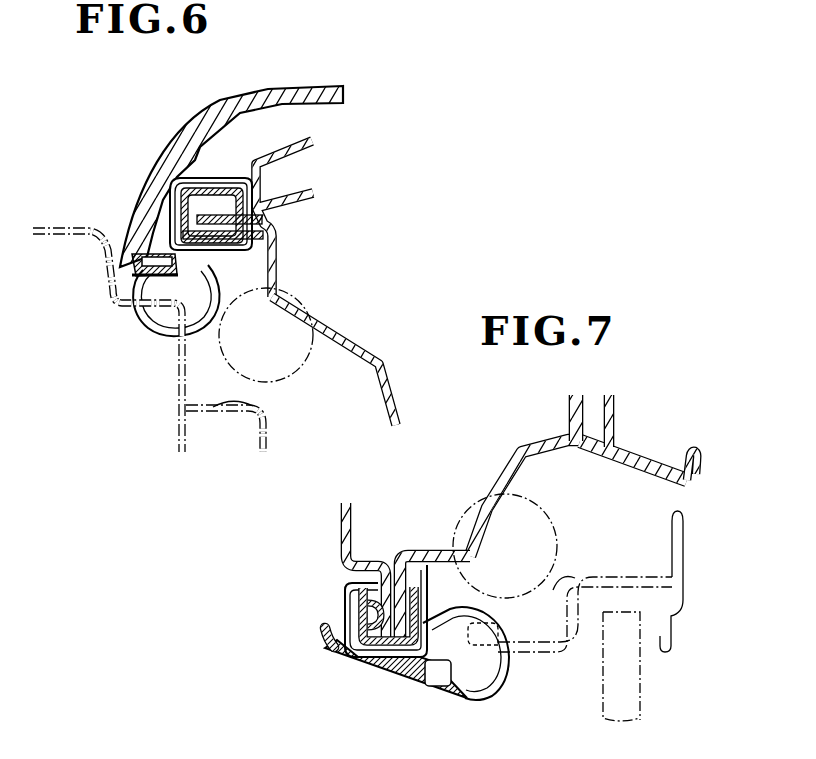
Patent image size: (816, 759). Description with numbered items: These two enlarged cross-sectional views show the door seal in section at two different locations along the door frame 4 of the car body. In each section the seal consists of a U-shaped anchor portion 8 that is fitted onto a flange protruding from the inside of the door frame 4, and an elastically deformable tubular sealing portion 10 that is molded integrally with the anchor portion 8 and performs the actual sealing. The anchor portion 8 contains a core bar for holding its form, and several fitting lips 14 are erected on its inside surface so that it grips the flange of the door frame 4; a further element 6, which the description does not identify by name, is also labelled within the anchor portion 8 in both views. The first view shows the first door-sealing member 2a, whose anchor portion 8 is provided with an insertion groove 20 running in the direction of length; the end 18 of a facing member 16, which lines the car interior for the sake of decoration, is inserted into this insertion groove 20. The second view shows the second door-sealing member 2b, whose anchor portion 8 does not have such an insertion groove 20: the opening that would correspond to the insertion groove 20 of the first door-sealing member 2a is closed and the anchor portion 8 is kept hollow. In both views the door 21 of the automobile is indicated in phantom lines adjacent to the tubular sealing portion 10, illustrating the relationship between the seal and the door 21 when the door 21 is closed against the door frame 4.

In FIG. 6, the first door-sealing member 2a is at (251, 274).
In FIG. 7, the second door-sealing member 2b is at (386, 694).
In FIG. 6, the door frame 4 is at (348, 338).
In FIG. 7, the door frame 4 is at (507, 467).
In FIG. 6, the metal core insert 6 is at (215, 217).
In FIG. 7, the metal core insert 6 is at (383, 580).
In FIG. 6, the anchor portion 8 is at (165, 193).
In FIG. 7, the anchor portion 8 is at (360, 663).
In FIG. 6, the tubular sealing portion 10 is at (172, 333).
In FIG. 7, the tubular sealing portion 10 is at (493, 680).
In FIG. 6, the fitting lips 14 is at (278, 227).
In FIG. 7, the fitting lips 14 is at (370, 622).
In FIG. 6, the facing member 16 is at (230, 118).
In FIG. 6, the end of the facing member 18 is at (130, 265).
In FIG. 6, the insertion groove 20 is at (148, 296).
In FIG. 6, the door 21 is at (178, 408).
In FIG. 7, the door 21 is at (686, 587).